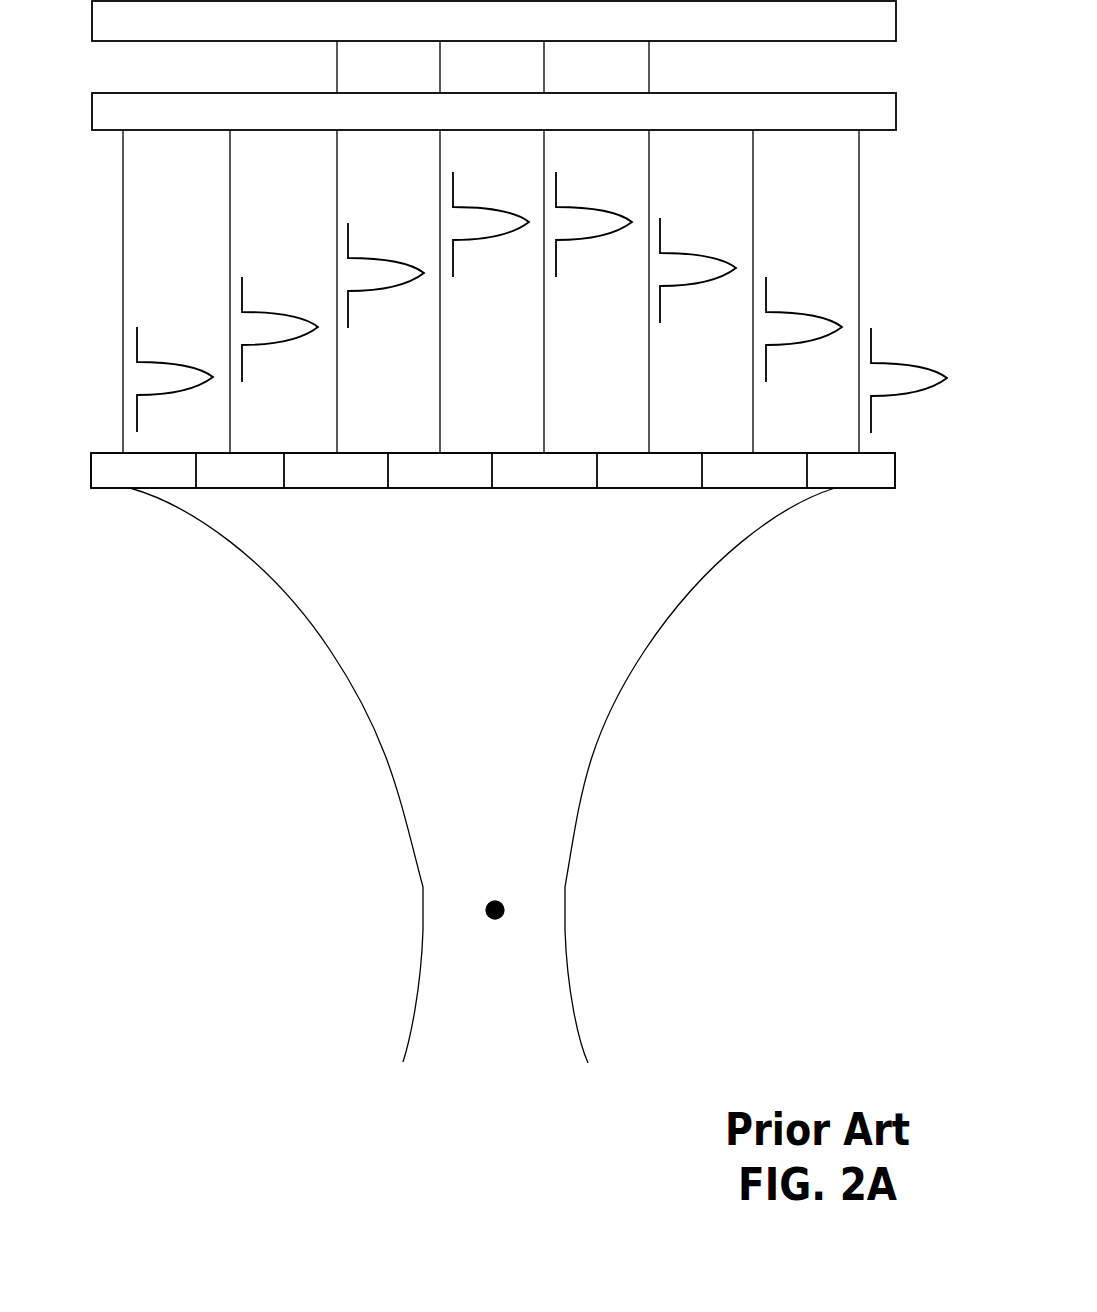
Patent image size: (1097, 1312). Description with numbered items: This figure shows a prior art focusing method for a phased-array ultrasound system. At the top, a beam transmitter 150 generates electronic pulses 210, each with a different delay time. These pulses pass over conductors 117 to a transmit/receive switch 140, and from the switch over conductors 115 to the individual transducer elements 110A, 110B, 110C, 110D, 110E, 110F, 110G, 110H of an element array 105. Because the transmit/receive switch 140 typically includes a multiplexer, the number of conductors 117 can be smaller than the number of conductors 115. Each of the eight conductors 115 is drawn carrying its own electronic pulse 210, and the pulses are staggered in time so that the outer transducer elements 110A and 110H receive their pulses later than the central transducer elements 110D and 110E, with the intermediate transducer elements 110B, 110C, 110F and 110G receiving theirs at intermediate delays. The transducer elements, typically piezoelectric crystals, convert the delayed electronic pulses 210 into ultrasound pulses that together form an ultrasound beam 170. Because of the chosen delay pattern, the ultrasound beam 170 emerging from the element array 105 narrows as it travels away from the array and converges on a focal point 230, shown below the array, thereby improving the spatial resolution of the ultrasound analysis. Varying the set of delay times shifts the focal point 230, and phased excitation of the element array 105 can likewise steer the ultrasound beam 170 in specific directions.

The beam transmitter 150 is at (494, 21).
The transmit/receive switch 140 is at (494, 111).
The conductors 117 is at (440, 68).
The conductors 115 is at (230, 204).
The electronic pulses 210 is at (170, 361).
The element array 105 is at (82, 458).
The transducer element 110A is at (105, 490).
The transducer element 110B is at (222, 488).
The transducer element 110C is at (340, 488).
The transducer element 110D is at (448, 488).
The transducer element 110E is at (548, 488).
The transducer element 110F is at (622, 488).
The transducer element 110G is at (732, 488).
The transducer element 110H is at (872, 488).
The ultrasound beam 170 is at (363, 707).
The focal point 230 is at (495, 920).